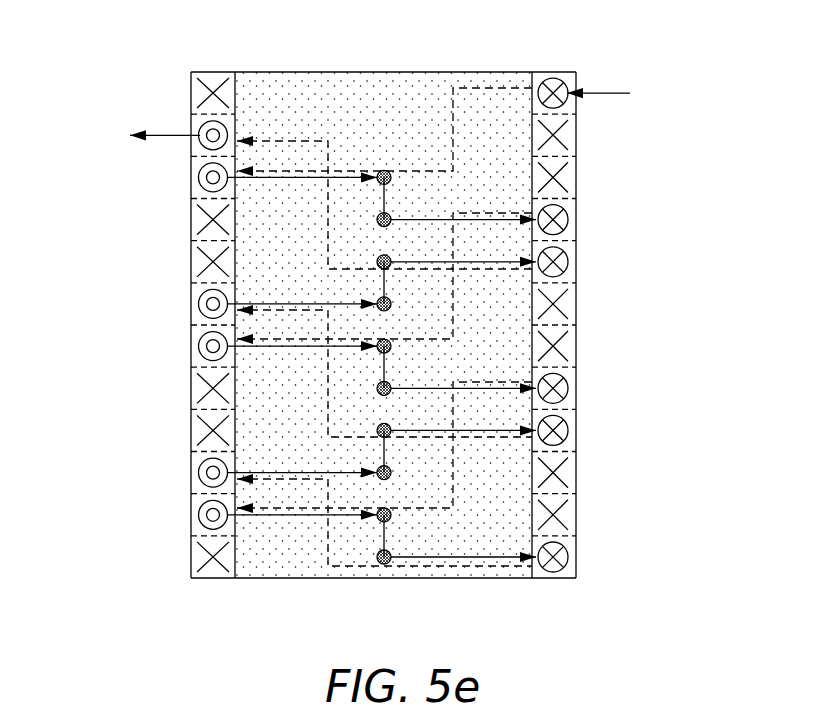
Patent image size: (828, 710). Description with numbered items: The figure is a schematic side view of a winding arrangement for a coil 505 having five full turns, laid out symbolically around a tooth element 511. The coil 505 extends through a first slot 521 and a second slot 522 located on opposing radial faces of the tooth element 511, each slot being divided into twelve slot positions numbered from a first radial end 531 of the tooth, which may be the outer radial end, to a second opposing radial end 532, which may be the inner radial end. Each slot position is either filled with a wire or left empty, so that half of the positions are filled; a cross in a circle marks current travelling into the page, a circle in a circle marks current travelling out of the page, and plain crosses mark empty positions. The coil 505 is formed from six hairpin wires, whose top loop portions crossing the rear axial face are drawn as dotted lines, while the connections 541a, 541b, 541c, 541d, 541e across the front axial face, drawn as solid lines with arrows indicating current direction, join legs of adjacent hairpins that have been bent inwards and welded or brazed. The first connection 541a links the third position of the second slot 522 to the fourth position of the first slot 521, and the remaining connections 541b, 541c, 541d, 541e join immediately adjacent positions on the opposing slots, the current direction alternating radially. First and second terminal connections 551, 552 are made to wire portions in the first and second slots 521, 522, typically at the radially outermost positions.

The coil 505 is at (130, 80).
The tooth element 511 is at (394, 128).
The first slot 521 is at (553, 64).
The second slot 522 is at (214, 66).
The first radial end 531 is at (359, 72).
The second radial end 532 is at (400, 578).
The first connection 541a is at (385, 199).
The second connection 541b is at (385, 283).
The third connection 541c is at (385, 359).
The fourth connection 541d is at (385, 452).
The fifth connection 541e is at (385, 535).
The first terminal connection 551 is at (608, 94).
The second terminal connection 552 is at (157, 135).